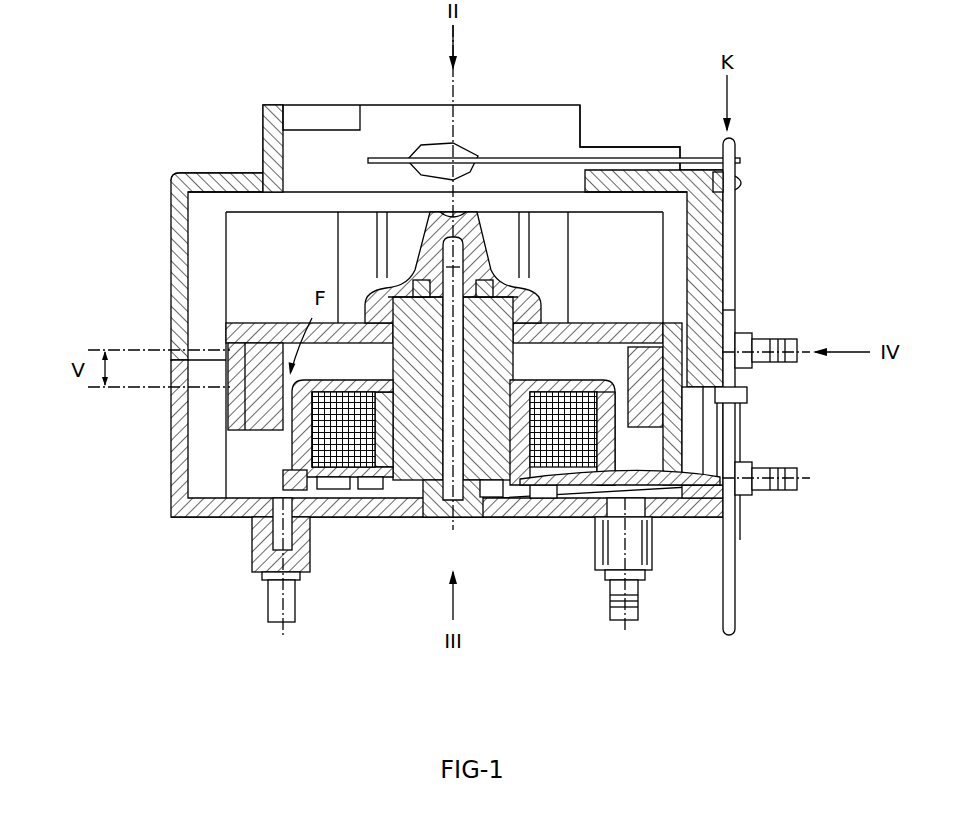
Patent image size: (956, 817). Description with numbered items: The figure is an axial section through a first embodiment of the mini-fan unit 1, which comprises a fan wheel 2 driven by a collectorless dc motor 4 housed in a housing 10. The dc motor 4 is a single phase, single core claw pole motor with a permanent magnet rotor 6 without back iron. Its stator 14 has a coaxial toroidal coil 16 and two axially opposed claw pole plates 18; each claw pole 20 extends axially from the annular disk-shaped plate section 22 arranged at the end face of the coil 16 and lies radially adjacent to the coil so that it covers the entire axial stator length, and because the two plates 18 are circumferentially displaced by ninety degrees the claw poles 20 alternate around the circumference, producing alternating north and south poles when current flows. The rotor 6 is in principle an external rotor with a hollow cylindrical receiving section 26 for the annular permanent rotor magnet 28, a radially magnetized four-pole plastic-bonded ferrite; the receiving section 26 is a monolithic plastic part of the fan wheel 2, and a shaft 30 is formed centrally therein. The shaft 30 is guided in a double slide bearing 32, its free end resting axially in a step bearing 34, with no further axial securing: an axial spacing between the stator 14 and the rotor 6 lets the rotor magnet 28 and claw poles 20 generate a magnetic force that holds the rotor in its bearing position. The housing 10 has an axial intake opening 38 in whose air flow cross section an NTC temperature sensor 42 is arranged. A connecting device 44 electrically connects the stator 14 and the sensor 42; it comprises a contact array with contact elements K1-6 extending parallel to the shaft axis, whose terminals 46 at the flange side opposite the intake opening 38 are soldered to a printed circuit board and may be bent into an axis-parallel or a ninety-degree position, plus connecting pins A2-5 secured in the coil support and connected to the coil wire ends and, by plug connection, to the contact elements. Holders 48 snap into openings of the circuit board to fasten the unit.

The mini-fan unit 1 is at (135, 550).
The fan wheel 2 is at (204, 215).
The dc motor 4 is at (237, 448).
The permanent magnet rotor 6 is at (682, 407).
The housing 10 is at (180, 233).
The stator 14 is at (597, 373).
The toroidal coil 16 is at (565, 455).
The claw pole plate 18 is at (548, 353).
The claw pole 20 is at (308, 482).
The plate section 22 is at (363, 382).
The receiving section 26 is at (222, 332).
The rotor magnet 28 is at (245, 402).
The shaft 30 is at (480, 212).
The slide bearing 32 is at (510, 298).
The step bearing 34 is at (476, 495).
The intake opening 38 is at (383, 118).
The temperature sensor 42 is at (465, 155).
The connecting device 44 is at (748, 528).
The terminal 46 is at (728, 593).
The holder 48 is at (790, 345).
The contact elements K1-6 is at (730, 205).
The connecting pins A2-5 is at (668, 480).